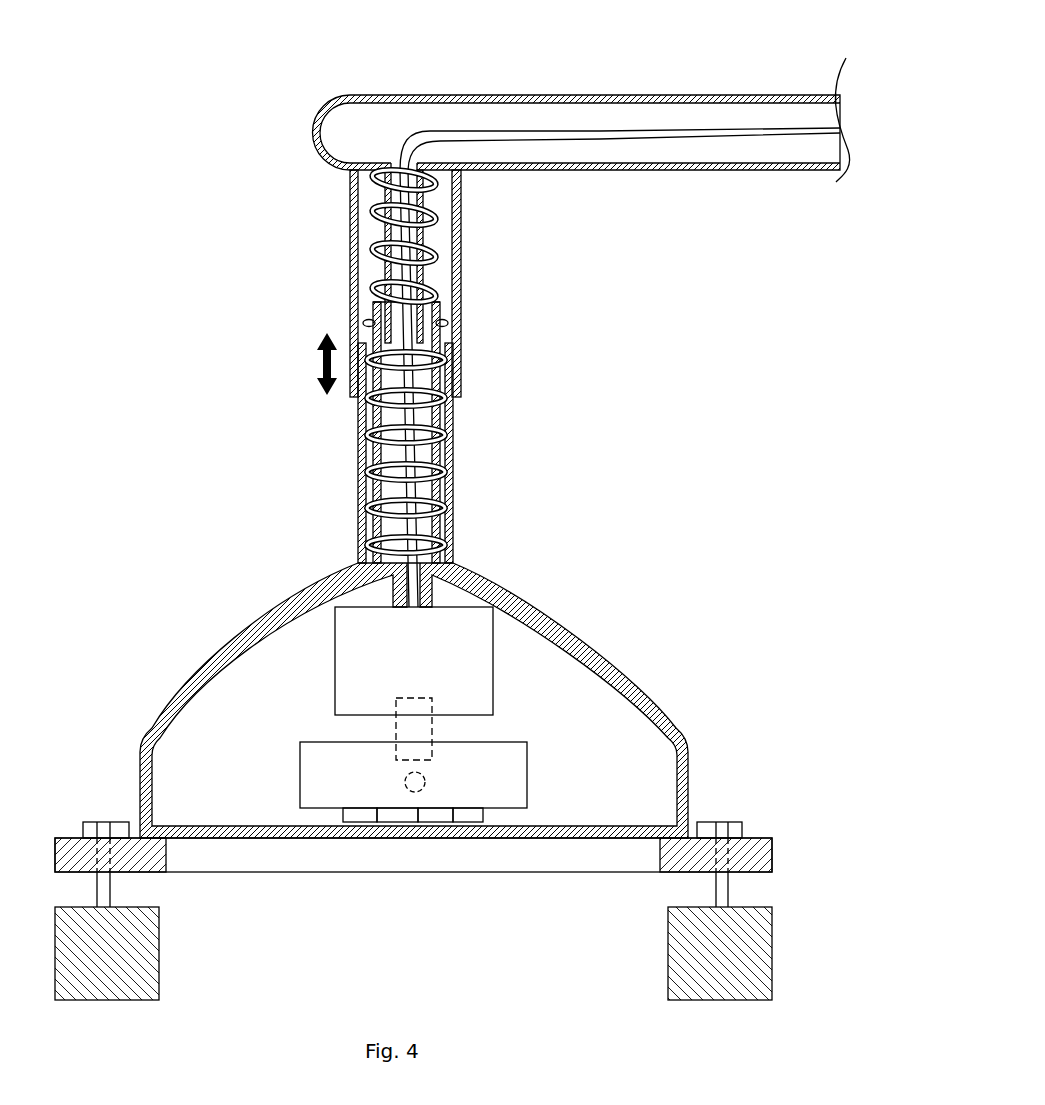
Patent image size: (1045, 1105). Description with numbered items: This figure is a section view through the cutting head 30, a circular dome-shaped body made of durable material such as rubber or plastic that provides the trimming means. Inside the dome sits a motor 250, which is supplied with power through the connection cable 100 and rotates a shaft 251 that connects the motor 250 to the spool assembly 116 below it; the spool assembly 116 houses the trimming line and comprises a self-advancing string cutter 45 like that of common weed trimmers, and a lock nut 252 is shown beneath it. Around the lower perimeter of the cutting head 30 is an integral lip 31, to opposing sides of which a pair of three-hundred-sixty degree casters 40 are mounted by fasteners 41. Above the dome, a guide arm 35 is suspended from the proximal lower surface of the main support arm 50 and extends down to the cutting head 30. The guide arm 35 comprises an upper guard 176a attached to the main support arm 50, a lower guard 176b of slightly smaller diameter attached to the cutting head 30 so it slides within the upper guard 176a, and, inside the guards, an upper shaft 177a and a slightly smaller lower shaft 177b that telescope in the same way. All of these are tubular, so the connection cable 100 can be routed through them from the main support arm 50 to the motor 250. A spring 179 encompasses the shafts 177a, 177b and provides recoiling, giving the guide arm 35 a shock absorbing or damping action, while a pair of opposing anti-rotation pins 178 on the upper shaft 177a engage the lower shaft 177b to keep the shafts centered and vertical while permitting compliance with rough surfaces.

The cutting head 30 is at (650, 685).
The integral lip 31 is at (277, 866).
The guide arm 35 is at (605, 352).
The casters 40 is at (142, 966).
The fasteners 41 is at (104, 830).
The self-advancing string cutter 45 is at (419, 790).
The main support arm 50 is at (372, 96).
The connection cable 100 is at (490, 130).
The spool assembly 116 is at (488, 785).
The upper guard 176a is at (350, 238).
The lower guard 176b is at (358, 530).
The upper shaft 177a is at (386, 279).
The lower shaft 177b is at (452, 489).
The anti-rotation pins 178 is at (370, 323).
The spring 179 is at (437, 470).
The motor 250 is at (462, 650).
The shaft 251 is at (433, 730).
The lock nut 252 is at (388, 812).